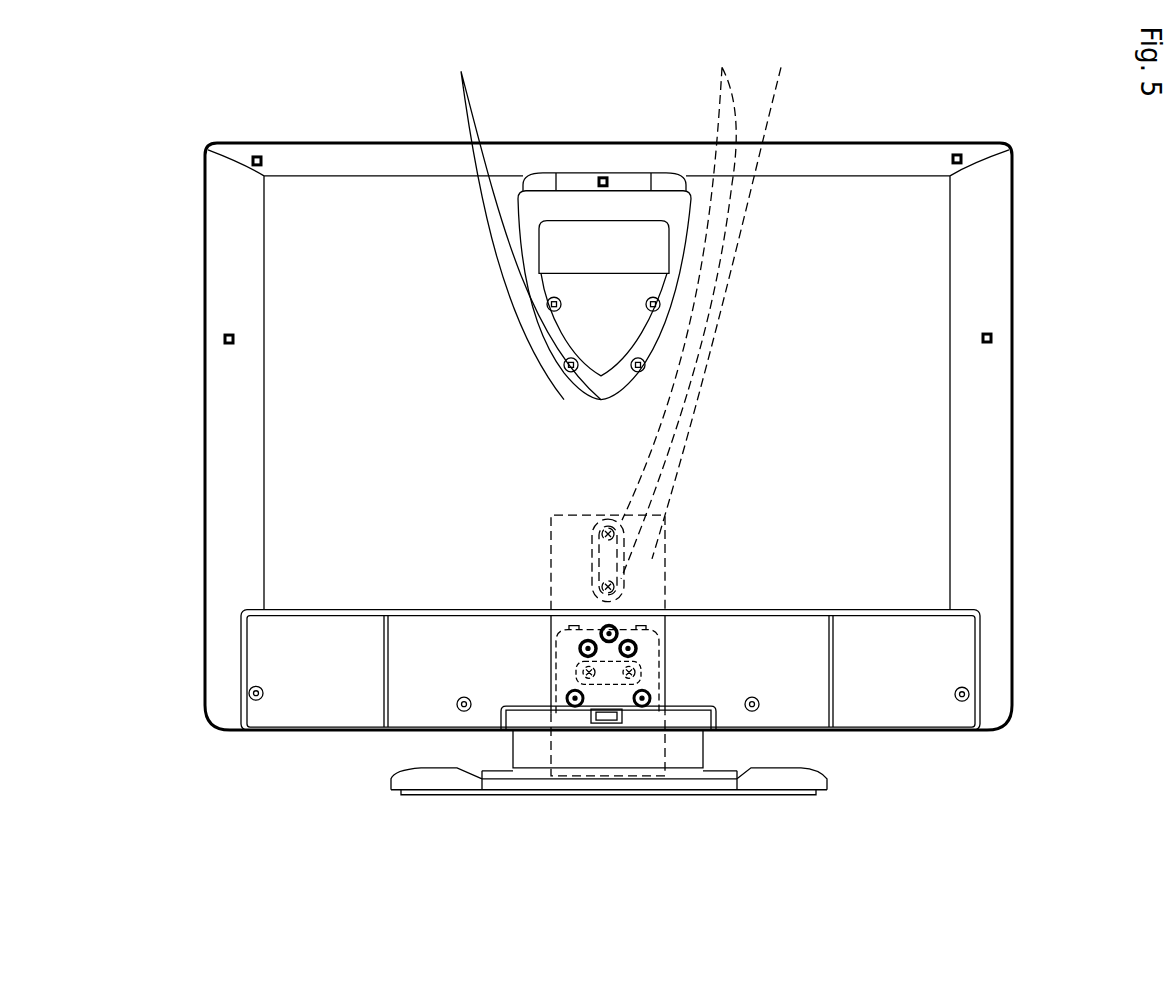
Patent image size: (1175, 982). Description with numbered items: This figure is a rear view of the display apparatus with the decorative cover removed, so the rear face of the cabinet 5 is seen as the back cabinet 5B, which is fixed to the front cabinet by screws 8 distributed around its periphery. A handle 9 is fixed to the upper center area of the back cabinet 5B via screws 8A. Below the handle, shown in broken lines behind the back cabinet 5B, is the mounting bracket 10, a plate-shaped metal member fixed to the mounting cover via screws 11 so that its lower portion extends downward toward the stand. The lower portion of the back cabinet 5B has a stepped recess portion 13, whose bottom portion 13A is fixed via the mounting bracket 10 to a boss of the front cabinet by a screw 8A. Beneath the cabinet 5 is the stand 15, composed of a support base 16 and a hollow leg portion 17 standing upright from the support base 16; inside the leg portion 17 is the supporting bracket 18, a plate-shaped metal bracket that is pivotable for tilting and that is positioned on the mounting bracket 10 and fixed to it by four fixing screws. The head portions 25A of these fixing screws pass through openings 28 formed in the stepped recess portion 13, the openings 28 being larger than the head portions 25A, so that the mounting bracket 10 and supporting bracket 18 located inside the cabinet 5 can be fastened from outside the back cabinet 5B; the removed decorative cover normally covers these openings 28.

The cabinet 5 is at (1024, 222).
The back cabinet 5B is at (841, 207).
The screws 8 is at (222, 330).
The screws 8A is at (523, 218).
The handle 9 is at (640, 197).
The mounting bracket 10 is at (670, 406).
The screws 11 is at (469, 850).
The stepped recess portion 13 is at (852, 610).
The bottom portion 13A is at (905, 705).
The stand 15 is at (822, 798).
The support base 16 is at (410, 781).
The leg portion 17 is at (687, 740).
The supporting bracket 18 is at (650, 688).
The head portions 25A is at (638, 703).
The openings 28 is at (662, 614).